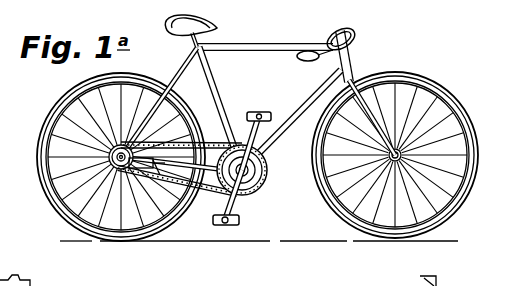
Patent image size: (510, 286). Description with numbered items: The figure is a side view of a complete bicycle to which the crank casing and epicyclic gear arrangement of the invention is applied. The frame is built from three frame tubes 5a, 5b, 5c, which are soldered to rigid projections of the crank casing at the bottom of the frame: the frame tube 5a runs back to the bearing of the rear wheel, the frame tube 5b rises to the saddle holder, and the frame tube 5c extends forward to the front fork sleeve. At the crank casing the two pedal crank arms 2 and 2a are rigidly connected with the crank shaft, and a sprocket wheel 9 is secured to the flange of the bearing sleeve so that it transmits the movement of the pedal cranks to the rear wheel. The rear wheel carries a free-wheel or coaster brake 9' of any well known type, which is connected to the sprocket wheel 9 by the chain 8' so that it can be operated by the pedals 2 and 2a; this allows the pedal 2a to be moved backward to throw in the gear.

The frame tube 5a is at (172, 98).
The frame tube 5b is at (218, 92).
The frame tube 5c is at (313, 104).
The pedal crank arm 2 is at (248, 118).
The pedal crank arm 2a is at (236, 208).
The sprocket wheel 9 is at (253, 173).
The free-wheel or coaster brake 9' is at (159, 203).
The chain 8' is at (147, 206).